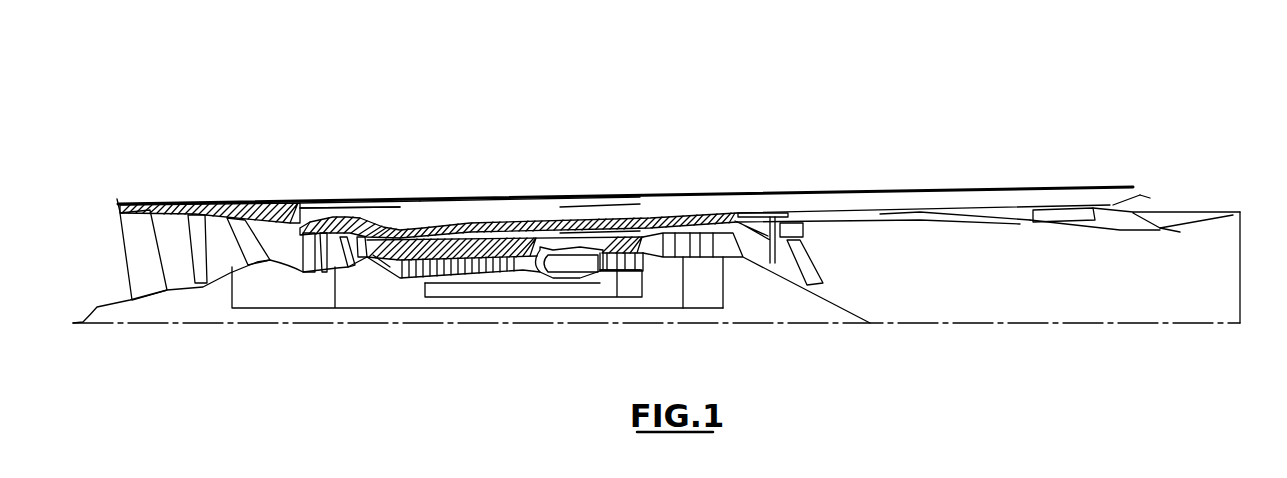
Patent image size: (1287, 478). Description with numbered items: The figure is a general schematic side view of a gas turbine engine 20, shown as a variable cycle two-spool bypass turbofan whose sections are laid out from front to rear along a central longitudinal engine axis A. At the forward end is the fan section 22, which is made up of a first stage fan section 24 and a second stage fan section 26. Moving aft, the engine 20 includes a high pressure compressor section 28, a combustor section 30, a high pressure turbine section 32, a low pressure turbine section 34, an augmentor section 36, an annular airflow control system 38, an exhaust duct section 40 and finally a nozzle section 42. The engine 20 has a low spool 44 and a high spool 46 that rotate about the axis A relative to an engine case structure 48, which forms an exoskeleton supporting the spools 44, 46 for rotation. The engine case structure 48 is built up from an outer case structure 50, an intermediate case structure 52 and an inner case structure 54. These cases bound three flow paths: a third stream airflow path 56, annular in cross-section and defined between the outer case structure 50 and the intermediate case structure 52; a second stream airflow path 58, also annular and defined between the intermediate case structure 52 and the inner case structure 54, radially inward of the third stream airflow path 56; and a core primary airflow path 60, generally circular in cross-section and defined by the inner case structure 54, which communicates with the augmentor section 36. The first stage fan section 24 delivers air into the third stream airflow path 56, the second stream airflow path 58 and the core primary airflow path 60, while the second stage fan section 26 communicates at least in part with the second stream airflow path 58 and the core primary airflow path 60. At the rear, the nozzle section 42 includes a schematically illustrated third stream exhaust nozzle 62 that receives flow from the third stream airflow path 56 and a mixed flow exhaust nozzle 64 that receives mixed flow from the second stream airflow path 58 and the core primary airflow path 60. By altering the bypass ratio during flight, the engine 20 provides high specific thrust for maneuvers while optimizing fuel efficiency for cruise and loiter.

The gas turbine engine 20 is at (636, 50).
The fan section 22 is at (403, 103).
The first stage fan section 24 is at (293, 148).
The second stage fan section 26 is at (403, 148).
The high pressure compressor section 28 is at (523, 148).
The combustor section 30 is at (607, 148).
The high pressure turbine section 32 is at (607, 148).
The low pressure turbine section 34 is at (657, 148).
The augmentor section 36 is at (840, 148).
The annular airflow control system 38 is at (922, 205).
The exhaust duct section 40 is at (1043, 148).
The nozzle section 42 is at (1240, 148).
The low spool 44 is at (658, 300).
The high spool 46 is at (473, 289).
The engine case structure 48 is at (460, 201).
The outer case structure 50 is at (413, 203).
The intermediate case structure 52 is at (424, 214).
The inner case structure 54 is at (493, 228).
The third stream airflow path 56 is at (543, 212).
The second stream airflow path 58 is at (608, 228).
The core primary airflow path 60 is at (386, 262).
The third stream exhaust nozzle 62 is at (1155, 197).
The mixed flow exhaust nozzle 64 is at (1179, 233).
The central longitudinal engine axis A is at (783, 323).